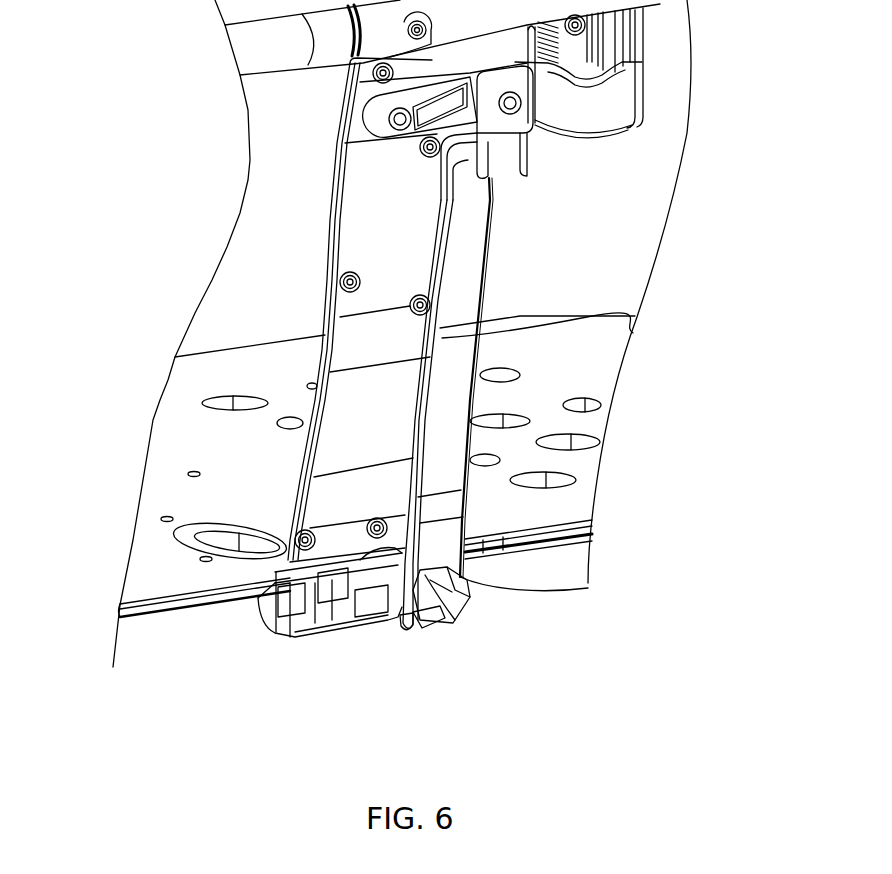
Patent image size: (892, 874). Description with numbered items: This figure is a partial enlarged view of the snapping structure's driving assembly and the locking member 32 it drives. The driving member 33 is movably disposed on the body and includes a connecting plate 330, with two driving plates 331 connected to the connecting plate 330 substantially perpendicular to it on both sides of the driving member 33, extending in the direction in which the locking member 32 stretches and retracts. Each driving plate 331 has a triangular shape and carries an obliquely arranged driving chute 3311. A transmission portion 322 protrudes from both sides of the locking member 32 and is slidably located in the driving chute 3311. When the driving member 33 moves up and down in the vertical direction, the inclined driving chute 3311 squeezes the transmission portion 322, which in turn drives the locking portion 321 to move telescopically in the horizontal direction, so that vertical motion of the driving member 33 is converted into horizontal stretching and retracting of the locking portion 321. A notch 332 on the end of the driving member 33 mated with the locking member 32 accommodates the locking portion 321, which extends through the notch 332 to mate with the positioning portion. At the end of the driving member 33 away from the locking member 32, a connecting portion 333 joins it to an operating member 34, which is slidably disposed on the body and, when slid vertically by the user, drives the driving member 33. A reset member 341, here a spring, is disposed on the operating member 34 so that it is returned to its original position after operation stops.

The locking member 32 is at (508, 622).
The locking portion 321 is at (457, 600).
The transmission portion 322 is at (430, 620).
The driving member 33 is at (633, 333).
The connecting plate 330 is at (455, 428).
The driving plate 331 is at (363, 625).
The driving chute 3311 is at (402, 634).
The notch 332 is at (588, 583).
The connecting portion 333 is at (512, 110).
The operating member 34 is at (638, 84).
The reset member 341 is at (643, 80).